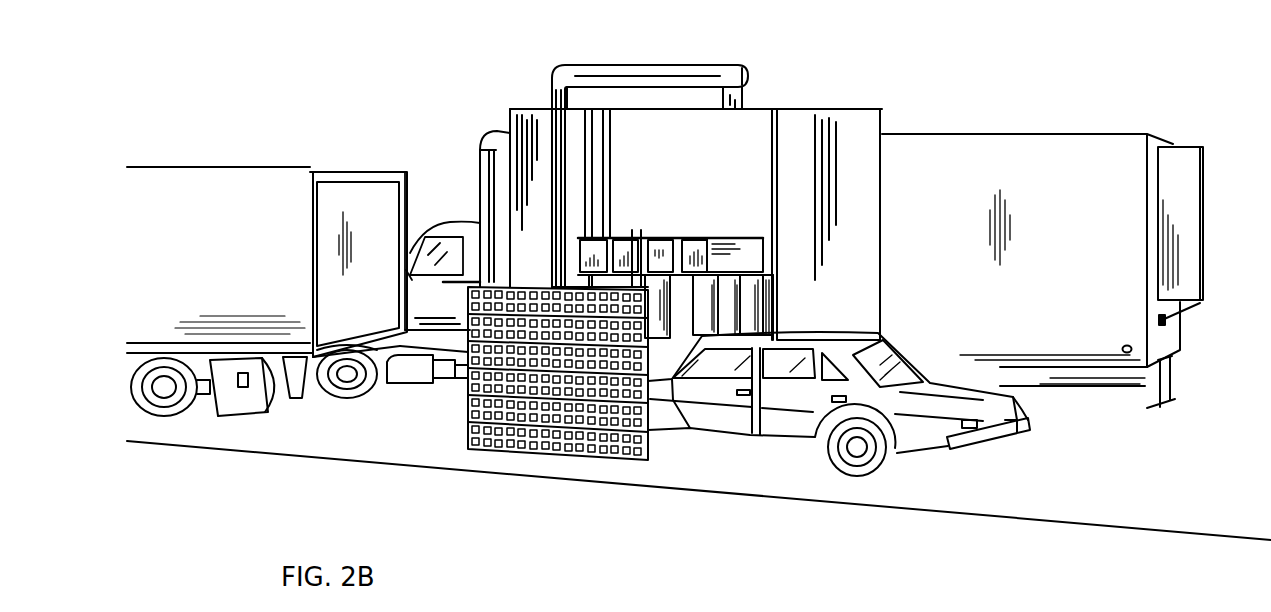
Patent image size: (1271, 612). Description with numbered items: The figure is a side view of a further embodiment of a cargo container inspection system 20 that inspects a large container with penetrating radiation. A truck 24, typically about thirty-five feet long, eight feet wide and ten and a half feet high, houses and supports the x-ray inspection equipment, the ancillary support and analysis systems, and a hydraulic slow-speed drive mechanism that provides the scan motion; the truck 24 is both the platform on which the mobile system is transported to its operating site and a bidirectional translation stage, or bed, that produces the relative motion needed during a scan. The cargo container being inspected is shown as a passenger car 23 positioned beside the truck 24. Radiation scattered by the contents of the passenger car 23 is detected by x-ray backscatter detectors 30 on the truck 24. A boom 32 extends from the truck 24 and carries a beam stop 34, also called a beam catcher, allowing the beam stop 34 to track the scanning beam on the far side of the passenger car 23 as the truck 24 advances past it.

The cargo container inspection system 20 is at (848, 85).
The passenger car 23 is at (875, 470).
The truck 24 is at (485, 132).
The x-ray backscatter detectors 30 is at (772, 290).
The boom 32 is at (635, 67).
The beam stop 34 is at (552, 242).